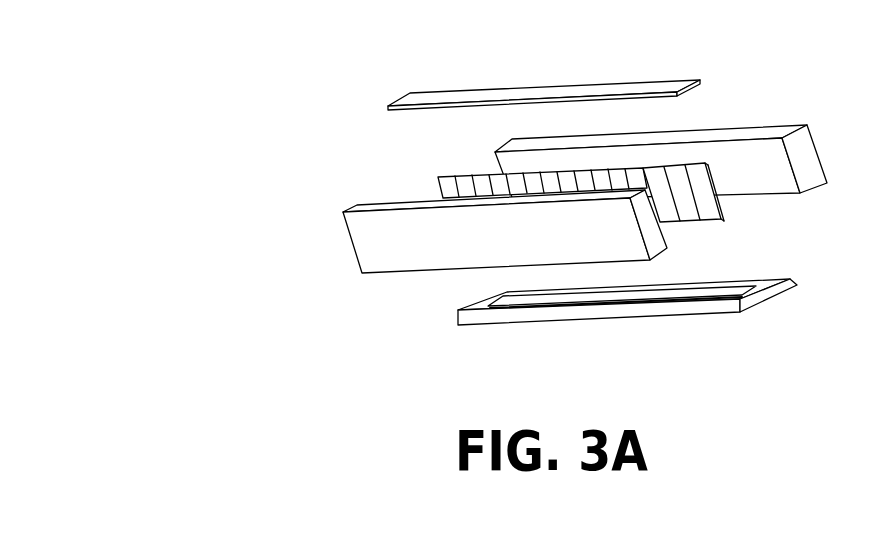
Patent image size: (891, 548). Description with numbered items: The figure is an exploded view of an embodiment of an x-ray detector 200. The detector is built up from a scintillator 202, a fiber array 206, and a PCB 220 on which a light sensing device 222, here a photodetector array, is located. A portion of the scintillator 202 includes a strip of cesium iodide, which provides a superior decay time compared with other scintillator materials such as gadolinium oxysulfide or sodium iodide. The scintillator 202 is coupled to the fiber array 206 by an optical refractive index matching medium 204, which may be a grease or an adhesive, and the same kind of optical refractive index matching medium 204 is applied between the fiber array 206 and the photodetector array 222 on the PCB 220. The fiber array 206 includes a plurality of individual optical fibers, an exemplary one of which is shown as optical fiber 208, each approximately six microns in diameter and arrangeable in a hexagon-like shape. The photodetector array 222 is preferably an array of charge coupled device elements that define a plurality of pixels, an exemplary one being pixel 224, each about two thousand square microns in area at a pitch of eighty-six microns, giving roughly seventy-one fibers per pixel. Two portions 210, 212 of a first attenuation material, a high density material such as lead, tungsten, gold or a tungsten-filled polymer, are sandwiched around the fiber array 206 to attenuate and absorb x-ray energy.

The x-ray detector 200 is at (236, 51).
The scintillator 202 is at (448, 90).
The optical refractive index matching medium 204 is at (700, 98).
The fiber array 206 is at (443, 178).
The optical fiber 208 is at (703, 224).
The portion of first attenuation material 210 is at (345, 227).
The portion of first attenuation material 212 is at (828, 184).
The PCB 220 is at (604, 330).
The light sensing device 222 is at (755, 301).
The pixel 224 is at (701, 300).